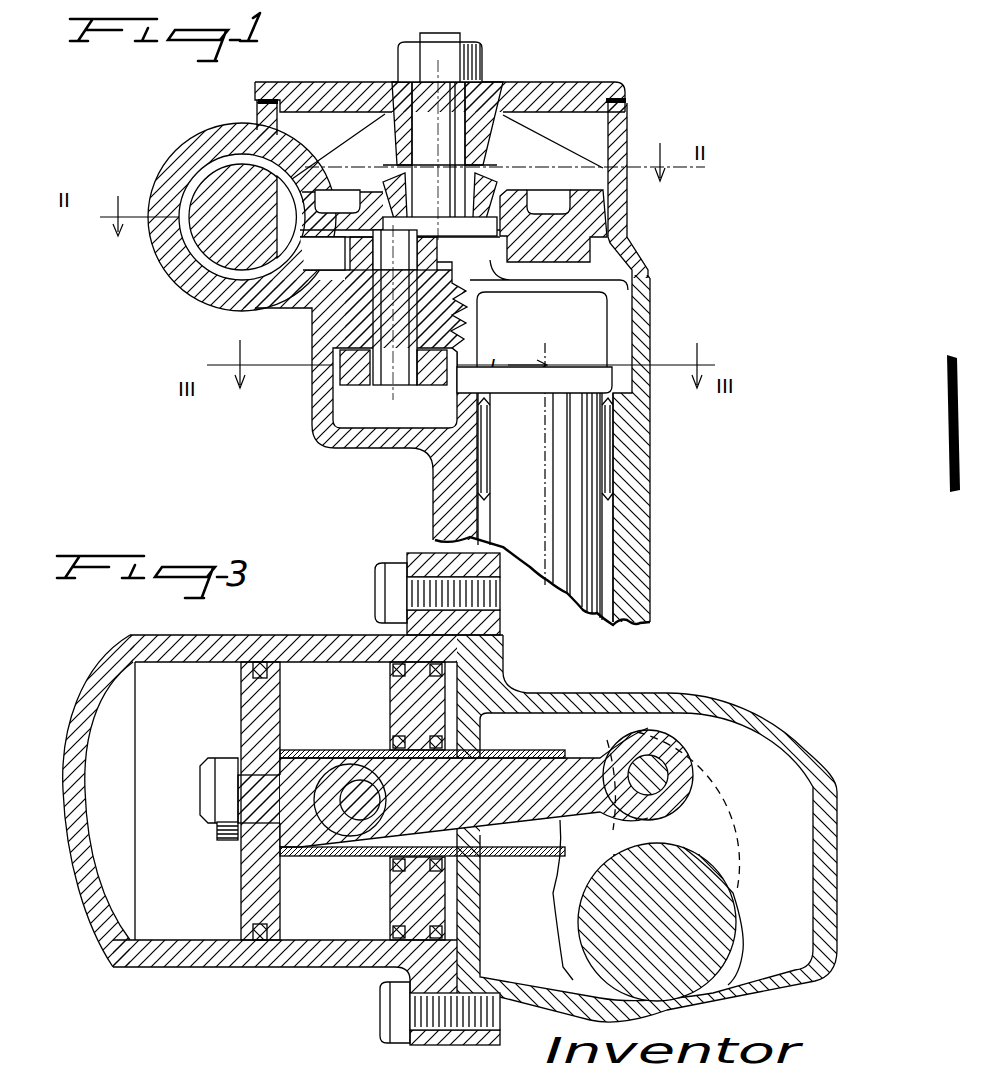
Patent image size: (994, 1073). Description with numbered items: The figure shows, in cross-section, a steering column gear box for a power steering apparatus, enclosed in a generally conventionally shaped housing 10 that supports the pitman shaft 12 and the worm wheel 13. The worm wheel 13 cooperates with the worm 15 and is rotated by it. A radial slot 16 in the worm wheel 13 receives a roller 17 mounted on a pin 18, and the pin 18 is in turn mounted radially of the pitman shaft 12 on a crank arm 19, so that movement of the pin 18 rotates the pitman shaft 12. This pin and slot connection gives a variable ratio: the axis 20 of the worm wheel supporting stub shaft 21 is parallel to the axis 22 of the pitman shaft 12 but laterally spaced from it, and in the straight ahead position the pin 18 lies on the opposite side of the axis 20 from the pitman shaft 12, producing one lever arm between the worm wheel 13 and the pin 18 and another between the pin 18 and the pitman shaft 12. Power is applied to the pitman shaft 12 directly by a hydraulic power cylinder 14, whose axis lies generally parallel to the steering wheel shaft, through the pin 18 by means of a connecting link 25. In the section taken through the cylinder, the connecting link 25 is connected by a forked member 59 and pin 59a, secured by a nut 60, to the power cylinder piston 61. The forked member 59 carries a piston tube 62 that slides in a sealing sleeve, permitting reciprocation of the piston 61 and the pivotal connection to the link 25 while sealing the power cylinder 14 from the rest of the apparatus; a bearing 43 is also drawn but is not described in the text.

In FIG. 1, the housing 10 is at (460, 508).
In FIG. 1, the pitman shaft 12 is at (587, 547).
In FIG. 3, the pitman shaft 12 is at (687, 963).
In FIG. 1, the worm wheel 13 is at (330, 200).
In FIG. 3, the power cylinder 14 is at (295, 955).
In FIG. 1, the worm 15 is at (222, 233).
In FIG. 1, the radial slot 16 is at (322, 252).
In FIG. 1, the roller 17 is at (423, 244).
In FIG. 1, the pin 18 is at (385, 372).
In FIG. 3, the pin 18 is at (653, 770).
In FIG. 1, the crank arm 19 is at (470, 373).
In FIG. 3, the crank arm 19 is at (727, 805).
In FIG. 1, the axis of the worm wheel stub shaft 20 is at (437, 150).
In FIG. 1, the stub shaft 21 is at (453, 108).
In FIG. 1, the axis of the pitman shaft 22 is at (547, 502).
In FIG. 1, the connecting link 25 is at (357, 373).
In FIG. 3, the connecting link 25 is at (583, 777).
In FIG. 3, the bearing 43 is at (405, 700).
In FIG. 3, the forked member 59 is at (318, 837).
In FIG. 3, the pin 59a is at (357, 807).
In FIG. 3, the nut 60 is at (223, 768).
In FIG. 3, the power cylinder piston 61 is at (250, 885).
In FIG. 3, the piston tube 62 is at (332, 750).